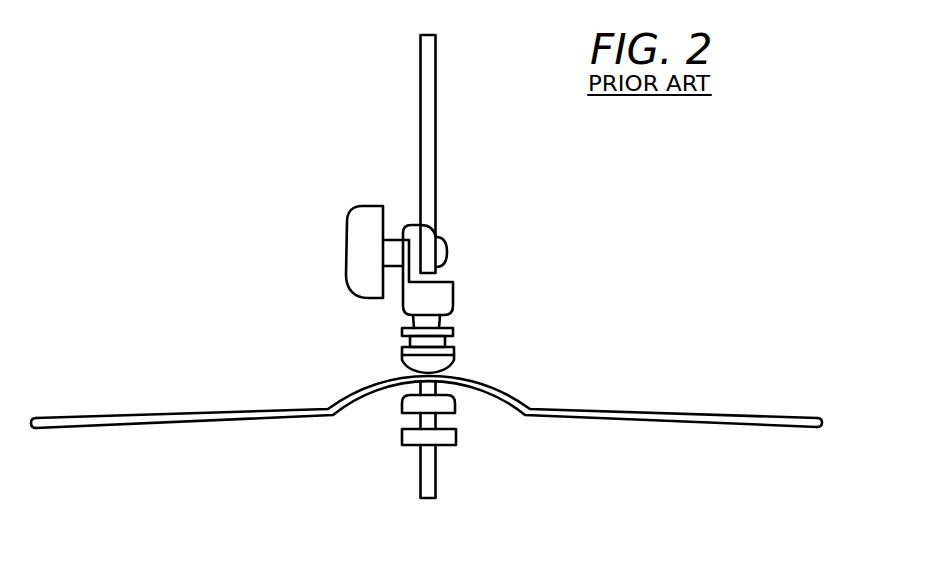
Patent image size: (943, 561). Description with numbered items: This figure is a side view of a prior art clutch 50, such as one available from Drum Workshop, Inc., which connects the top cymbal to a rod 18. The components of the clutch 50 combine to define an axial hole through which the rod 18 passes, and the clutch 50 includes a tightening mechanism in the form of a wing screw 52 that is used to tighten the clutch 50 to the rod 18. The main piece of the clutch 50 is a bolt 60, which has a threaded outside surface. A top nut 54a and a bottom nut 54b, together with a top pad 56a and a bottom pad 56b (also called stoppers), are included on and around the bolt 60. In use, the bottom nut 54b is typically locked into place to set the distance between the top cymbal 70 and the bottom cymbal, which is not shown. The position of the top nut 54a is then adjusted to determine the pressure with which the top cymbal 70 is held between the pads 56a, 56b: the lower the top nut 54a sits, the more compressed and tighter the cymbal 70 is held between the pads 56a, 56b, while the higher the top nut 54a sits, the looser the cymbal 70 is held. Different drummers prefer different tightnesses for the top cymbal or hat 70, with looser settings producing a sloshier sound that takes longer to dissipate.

The rod 18 is at (432, 133).
The clutch 50 is at (578, 219).
The wing screw 52 is at (347, 250).
The top nut 54a is at (404, 339).
The bottom nut 54b is at (402, 437).
The top pad 56a is at (456, 361).
The bottom pad 56b is at (456, 403).
The bolt 60 is at (412, 320).
The top cymbal 70 is at (682, 413).